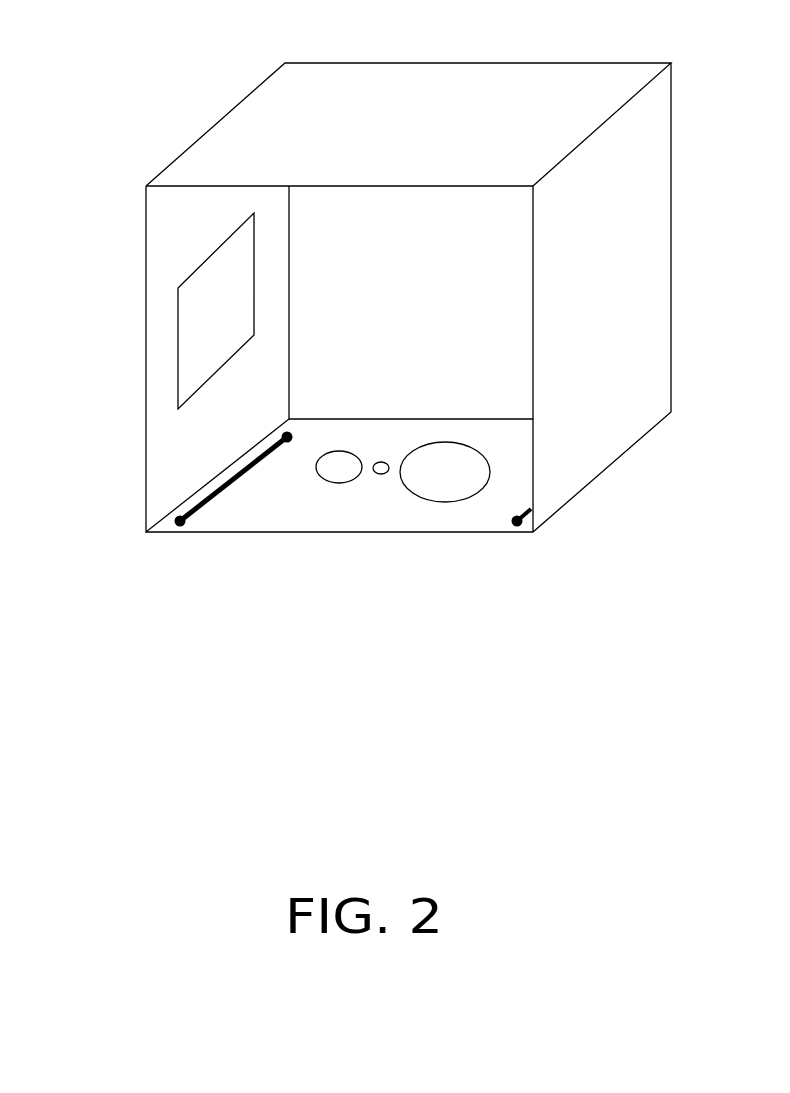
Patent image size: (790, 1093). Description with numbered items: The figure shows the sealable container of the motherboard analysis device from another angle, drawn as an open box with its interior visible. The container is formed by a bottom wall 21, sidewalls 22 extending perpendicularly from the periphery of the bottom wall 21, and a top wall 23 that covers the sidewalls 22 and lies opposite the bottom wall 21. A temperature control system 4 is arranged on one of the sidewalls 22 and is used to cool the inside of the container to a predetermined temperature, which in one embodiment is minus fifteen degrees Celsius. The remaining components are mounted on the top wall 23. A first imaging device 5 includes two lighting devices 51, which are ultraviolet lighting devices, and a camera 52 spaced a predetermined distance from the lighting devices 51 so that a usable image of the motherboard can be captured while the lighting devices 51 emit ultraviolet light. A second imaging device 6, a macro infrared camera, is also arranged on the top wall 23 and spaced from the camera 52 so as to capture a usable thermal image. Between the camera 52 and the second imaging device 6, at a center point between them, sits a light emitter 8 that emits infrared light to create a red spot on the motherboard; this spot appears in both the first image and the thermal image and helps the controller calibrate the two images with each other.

The bottom wall 21 is at (378, 87).
The sidewall 22 is at (163, 453).
The top wall 23 is at (472, 522).
The temperature control system 4 is at (203, 323).
The first imaging device 5 is at (269, 530).
The lighting device 51 is at (203, 508).
The camera 52 is at (329, 467).
The light emitter 8 is at (380, 470).
The second imaging device 6 is at (420, 482).